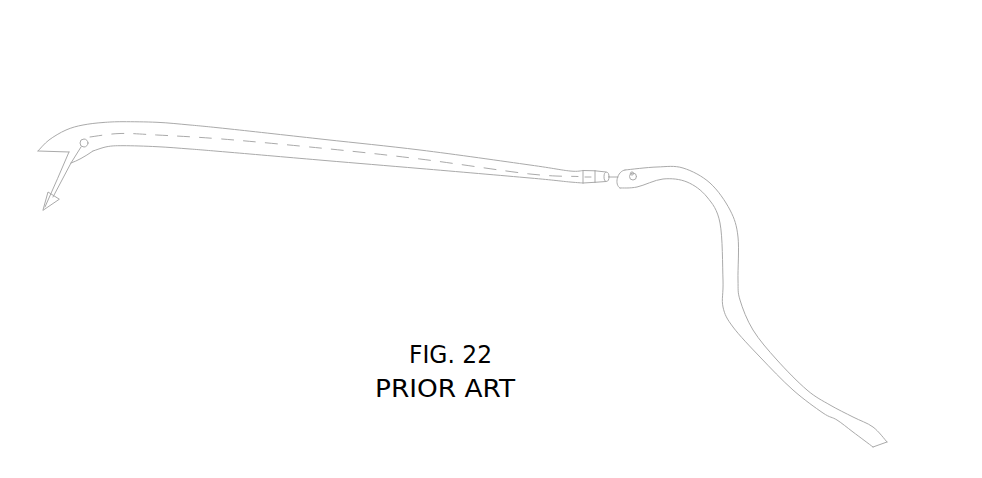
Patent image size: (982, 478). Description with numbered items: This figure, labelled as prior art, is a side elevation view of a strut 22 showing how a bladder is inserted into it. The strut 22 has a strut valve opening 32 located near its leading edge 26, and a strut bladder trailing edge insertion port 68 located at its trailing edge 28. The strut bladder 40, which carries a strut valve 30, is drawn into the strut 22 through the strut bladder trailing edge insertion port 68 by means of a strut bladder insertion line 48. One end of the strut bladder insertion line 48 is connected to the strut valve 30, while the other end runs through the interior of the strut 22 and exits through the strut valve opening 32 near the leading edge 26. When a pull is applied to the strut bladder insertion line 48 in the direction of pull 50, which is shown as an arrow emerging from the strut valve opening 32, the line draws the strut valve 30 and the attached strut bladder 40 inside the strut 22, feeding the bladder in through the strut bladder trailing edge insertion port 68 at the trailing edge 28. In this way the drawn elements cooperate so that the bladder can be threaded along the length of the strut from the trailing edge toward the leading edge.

The strut 22 is at (325, 140).
The leading edge 26 is at (55, 120).
The strut valve opening 32 is at (92, 153).
The direction of pull 50 is at (62, 188).
The strut bladder insertion line 48 is at (611, 168).
The trailing edge 28 is at (608, 142).
The strut bladder trailing edge insertion port 68 is at (605, 184).
The strut valve 30 is at (632, 171).
The strut bladder 40 is at (732, 312).